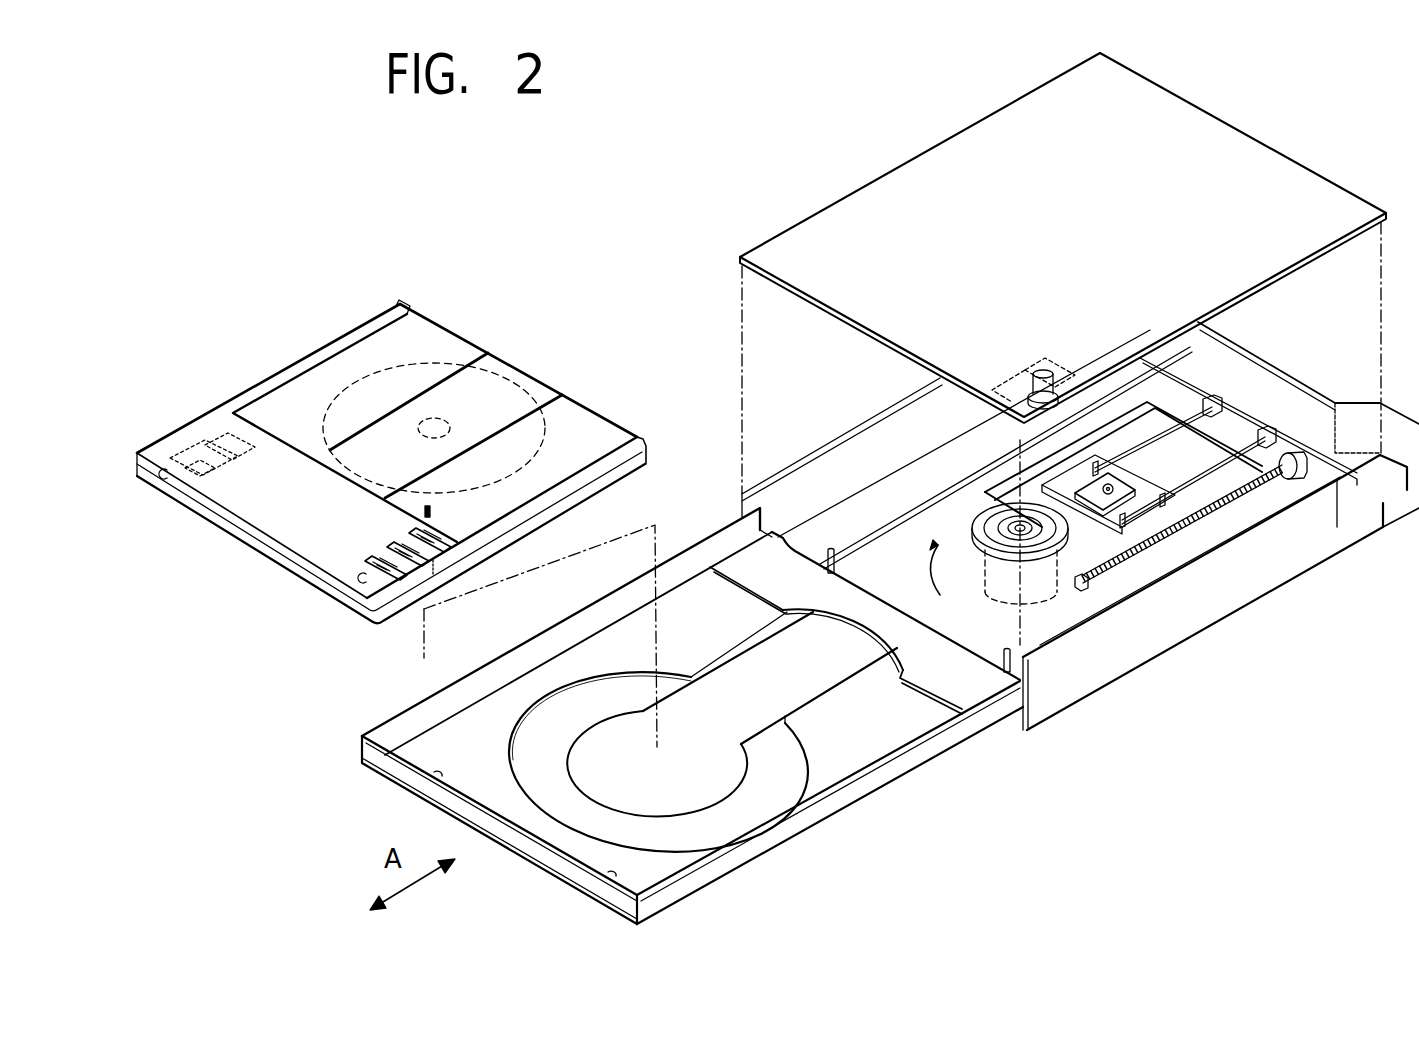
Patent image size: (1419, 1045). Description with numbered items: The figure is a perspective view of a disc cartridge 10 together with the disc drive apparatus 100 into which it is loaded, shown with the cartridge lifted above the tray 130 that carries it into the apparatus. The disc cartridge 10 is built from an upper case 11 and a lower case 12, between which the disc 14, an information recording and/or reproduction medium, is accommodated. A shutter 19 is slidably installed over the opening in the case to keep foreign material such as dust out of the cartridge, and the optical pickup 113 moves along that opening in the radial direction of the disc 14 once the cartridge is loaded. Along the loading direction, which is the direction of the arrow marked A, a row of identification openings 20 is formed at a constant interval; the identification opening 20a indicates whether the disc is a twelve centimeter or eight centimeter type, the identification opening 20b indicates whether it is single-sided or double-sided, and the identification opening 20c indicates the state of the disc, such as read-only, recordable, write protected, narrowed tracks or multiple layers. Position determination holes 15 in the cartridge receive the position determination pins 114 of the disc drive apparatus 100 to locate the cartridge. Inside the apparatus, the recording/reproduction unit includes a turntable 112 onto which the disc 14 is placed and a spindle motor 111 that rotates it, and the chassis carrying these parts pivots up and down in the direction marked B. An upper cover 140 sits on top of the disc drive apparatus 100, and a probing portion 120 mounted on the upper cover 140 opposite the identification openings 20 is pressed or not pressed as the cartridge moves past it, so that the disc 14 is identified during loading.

The disc cartridge 10 is at (389, 442).
The upper case 11 is at (592, 428).
The lower case 12 is at (645, 468).
The disc 14 is at (525, 385).
The position determination holes 15 is at (345, 574).
The shutter 19 is at (497, 352).
The identification openings 20 is at (369, 528).
The identification opening 20a is at (363, 561).
The identification opening 20b is at (388, 546).
The identification opening 20c is at (418, 534).
The disc drive apparatus 100 is at (1080, 547).
The spindle motor 111 is at (1052, 560).
The turntable 112 is at (1056, 558).
The optical pickup 113 is at (1222, 535).
The position determination pins 114 is at (830, 548).
The probing portion 120 is at (1018, 408).
The tray 130 is at (752, 855).
The upper cover 140 is at (797, 247).